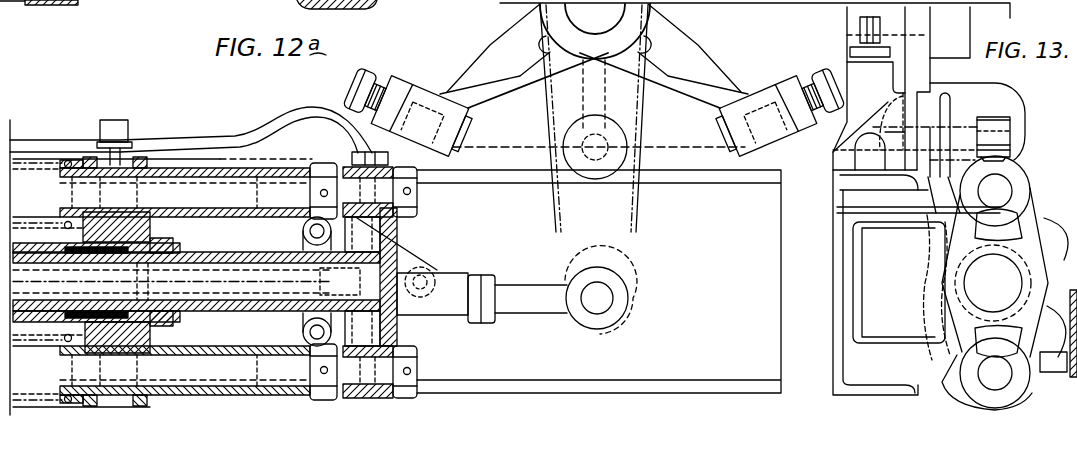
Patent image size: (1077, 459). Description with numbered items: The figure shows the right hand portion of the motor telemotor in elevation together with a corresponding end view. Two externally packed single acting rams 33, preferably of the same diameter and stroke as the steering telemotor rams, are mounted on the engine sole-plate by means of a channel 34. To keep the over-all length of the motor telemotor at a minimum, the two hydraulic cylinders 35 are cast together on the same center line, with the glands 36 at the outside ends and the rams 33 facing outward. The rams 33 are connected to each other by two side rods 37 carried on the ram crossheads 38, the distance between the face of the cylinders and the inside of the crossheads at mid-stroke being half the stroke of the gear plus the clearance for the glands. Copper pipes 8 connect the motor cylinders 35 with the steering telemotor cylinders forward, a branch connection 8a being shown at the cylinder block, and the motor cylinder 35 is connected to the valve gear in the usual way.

In FIG. 12A, the copper pipe 8 is at (219, 140).
In FIG. 13, the copper pipe 8 is at (925, 123).
In FIG. 12A, the branch pipe 8a is at (393, 300).
In FIG. 12A, the externally packed single acting ram 33 is at (279, 263).
In FIG. 12A, the channel 34 is at (599, 198).
In FIG. 13, the channel 34 is at (837, 287).
In FIG. 12A, the motor cylinder 35 is at (41, 310).
In FIG. 12A, the gland 36 is at (147, 243).
In FIG. 12A, the side rod 37 is at (175, 281).
In FIG. 13, the side rod 37 is at (1009, 283).
In FIG. 12A, the ram crosshead 38 is at (393, 264).
In FIG. 13, the ram crosshead 38 is at (967, 286).